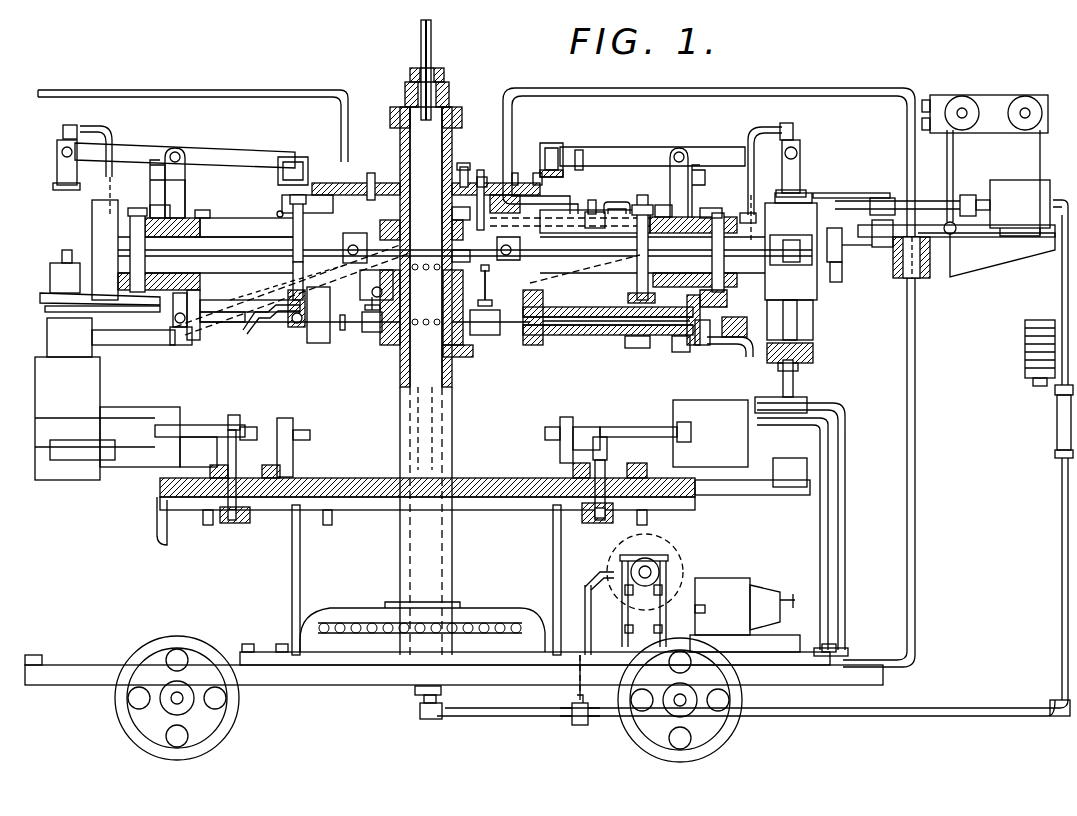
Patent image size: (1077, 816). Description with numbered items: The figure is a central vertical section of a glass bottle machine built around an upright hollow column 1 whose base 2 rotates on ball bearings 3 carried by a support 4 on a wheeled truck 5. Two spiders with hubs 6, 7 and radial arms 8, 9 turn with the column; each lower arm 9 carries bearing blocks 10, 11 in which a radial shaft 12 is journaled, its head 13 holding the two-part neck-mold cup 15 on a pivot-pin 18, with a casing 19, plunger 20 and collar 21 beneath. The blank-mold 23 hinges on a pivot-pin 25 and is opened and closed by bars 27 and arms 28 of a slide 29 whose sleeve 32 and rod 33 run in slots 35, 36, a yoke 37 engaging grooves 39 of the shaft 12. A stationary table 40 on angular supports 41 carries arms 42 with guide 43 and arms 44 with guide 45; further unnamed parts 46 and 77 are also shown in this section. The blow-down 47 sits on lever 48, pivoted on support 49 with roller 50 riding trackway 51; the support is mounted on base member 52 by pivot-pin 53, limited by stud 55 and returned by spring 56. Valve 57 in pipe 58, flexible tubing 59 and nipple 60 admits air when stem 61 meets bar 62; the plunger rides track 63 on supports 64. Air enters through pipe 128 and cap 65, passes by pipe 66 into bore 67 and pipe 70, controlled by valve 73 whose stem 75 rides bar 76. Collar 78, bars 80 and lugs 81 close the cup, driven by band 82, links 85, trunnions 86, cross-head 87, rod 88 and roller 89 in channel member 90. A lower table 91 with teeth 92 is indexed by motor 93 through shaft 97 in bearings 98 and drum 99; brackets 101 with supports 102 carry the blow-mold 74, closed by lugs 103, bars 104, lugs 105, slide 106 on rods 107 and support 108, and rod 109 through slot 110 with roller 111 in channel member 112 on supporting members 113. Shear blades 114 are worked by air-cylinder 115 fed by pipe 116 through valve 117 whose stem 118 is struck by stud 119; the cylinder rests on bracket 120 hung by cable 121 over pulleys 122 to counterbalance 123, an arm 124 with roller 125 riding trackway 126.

The hollow standard or column 1 is at (402, 558).
The base 2 is at (479, 616).
The ball bearings 3 is at (340, 622).
The support 4 is at (360, 683).
The wheeled truck 5 is at (296, 686).
The hub 6 is at (442, 233).
The hub 7 is at (373, 333).
The radial arm 8 is at (208, 217).
The radial arm 9 is at (186, 274).
The bearing block 10 is at (318, 343).
The bearing block 11 is at (195, 340).
The shaft 12 is at (223, 330).
The head 13 is at (152, 345).
The two-part sectional cup 15 is at (47, 333).
The pivot-pin 18 is at (712, 303).
The casing 19 is at (50, 277).
The plunger 20 is at (62, 257).
The collar 21 is at (780, 370).
The blank-mold 23 is at (803, 205).
The pivot-pin 25 is at (136, 215).
The bar 27 is at (758, 252).
The arm 28 is at (238, 252).
The slide 29 is at (280, 247).
The sleeve 32 is at (292, 262).
The shaft or rod 33 is at (289, 322).
The slot 35 is at (360, 282).
The slot 36 is at (340, 184).
The yoke 37 is at (293, 328).
The groove 39 is at (232, 330).
The circular table 40 is at (463, 163).
The angular support 41 is at (215, 92).
The arm 42 is at (562, 213).
The guide 43 is at (617, 203).
The arm 44 is at (322, 183).
The guide 45 is at (278, 200).
The bolt 46 is at (278, 213).
The blow-down 47 is at (800, 168).
The lever 48 is at (243, 150).
The support 49 is at (178, 150).
The roller 50 is at (290, 157).
The trackway 51 is at (560, 160).
The base member 52 is at (186, 202).
The pivot-pin 53 is at (157, 205).
The pin or stud 55 is at (220, 218).
The compression spring 56 is at (156, 160).
The valve 57 is at (591, 200).
The pipe 58 is at (110, 185).
The flexible tubing 59 is at (757, 125).
The nipple 60 is at (793, 130).
The stem 61 is at (575, 210).
The bar 62 is at (596, 216).
The track 63 is at (772, 413).
The support 64 is at (846, 528).
The cap 65 is at (452, 104).
The pipe 66 is at (453, 357).
The bore 67 is at (586, 337).
The pipe 70 is at (42, 298).
The valve 73 is at (365, 331).
The blow-mold 74 is at (40, 397).
The stem 75 is at (487, 305).
The bar 76 is at (481, 177).
The link 77 is at (265, 332).
The collar 78 is at (676, 352).
The bar 80 is at (175, 330).
The lug 81 is at (48, 309).
The band 82 is at (178, 346).
The link 85 is at (256, 270).
The trunnion 86 is at (519, 256).
The cross-head 87 is at (452, 257).
The rod 88 is at (452, 214).
The anti-friction roller 89 is at (310, 213).
The channel member 90 is at (369, 175).
The circular table 91 is at (347, 478).
The spike-like member 92 is at (208, 526).
The electric motor 93 is at (744, 586).
The shaft 97 is at (645, 560).
The bearing 98 is at (668, 568).
The drum 99 is at (607, 568).
The bracket 101 is at (165, 478).
The support 102 is at (135, 470).
The lug 103 is at (80, 450).
The bar 104 is at (178, 425).
The lug 105 is at (228, 423).
The slide 106 is at (210, 440).
The rod 107 is at (252, 427).
The support 108 is at (292, 422).
The rod 109 is at (237, 460).
The slot 110 is at (280, 470).
The anti-friction roller 111 is at (244, 524).
The channel member 112 is at (232, 524).
The supporting member 113 is at (292, 600).
The blade 114 is at (848, 193).
The air-cylinder 115 is at (1006, 188).
The pipe 116 is at (1061, 518).
The valve 117 is at (580, 725).
The stem 118 is at (583, 608).
The arm or stud 119 is at (583, 580).
The bracket 120 is at (977, 256).
The cable 121 is at (954, 150).
The pulley 122 is at (1015, 99).
The counterbalance 123 is at (1025, 357).
The arm 124 is at (881, 248).
The roller 125 is at (833, 228).
The trackway 126 is at (836, 282).
The pipe 128 is at (432, 57).